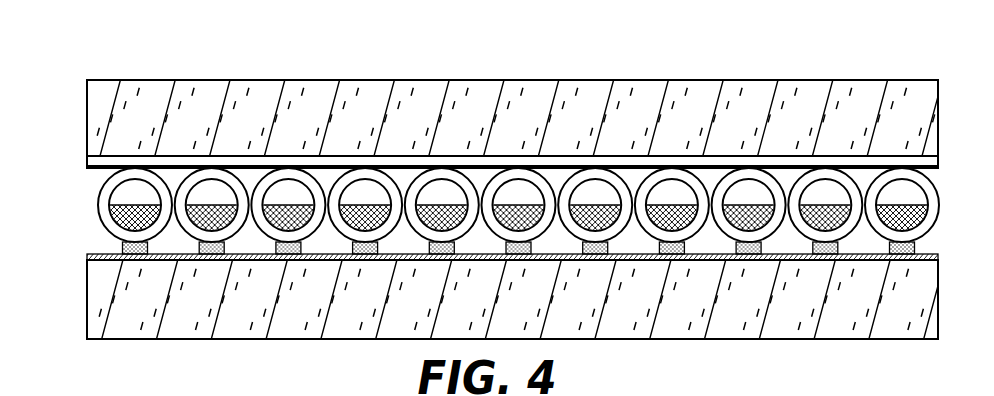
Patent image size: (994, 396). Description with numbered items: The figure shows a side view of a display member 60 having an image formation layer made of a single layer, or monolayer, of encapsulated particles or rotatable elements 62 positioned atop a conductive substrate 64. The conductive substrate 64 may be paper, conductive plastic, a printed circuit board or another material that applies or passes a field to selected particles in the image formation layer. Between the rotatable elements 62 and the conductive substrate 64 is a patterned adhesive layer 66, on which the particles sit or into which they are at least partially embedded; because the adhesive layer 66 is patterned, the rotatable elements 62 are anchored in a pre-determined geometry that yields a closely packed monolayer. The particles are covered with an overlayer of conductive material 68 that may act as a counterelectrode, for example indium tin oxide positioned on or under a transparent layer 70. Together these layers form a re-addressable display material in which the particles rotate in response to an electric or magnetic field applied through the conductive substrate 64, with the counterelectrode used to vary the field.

The display member 60 is at (449, 63).
The transparent layer 70 is at (107, 110).
The conductive material 68 is at (97, 160).
The rotatable elements 62 is at (107, 205).
The patterned adhesive layer 66 is at (122, 248).
The conductive substrate 64 is at (98, 305).